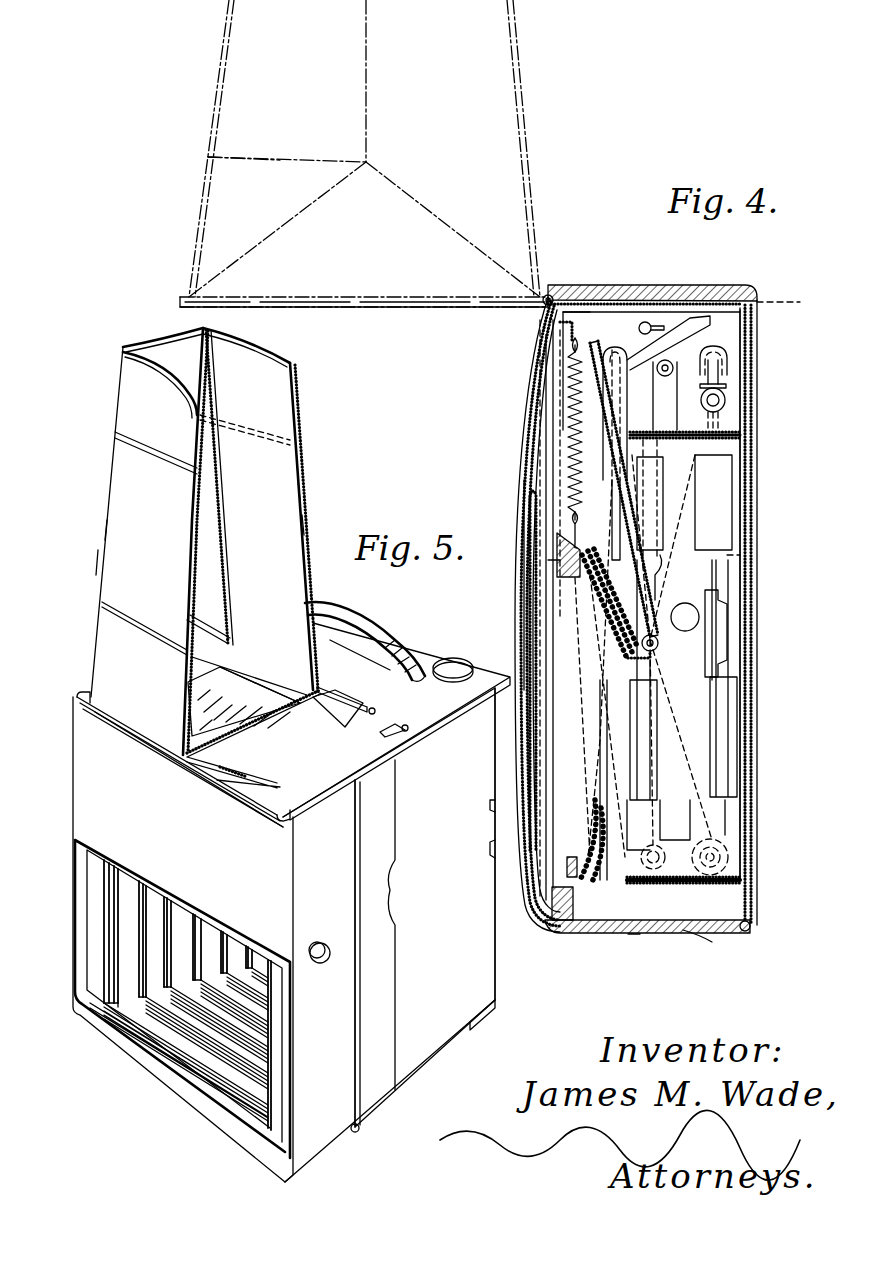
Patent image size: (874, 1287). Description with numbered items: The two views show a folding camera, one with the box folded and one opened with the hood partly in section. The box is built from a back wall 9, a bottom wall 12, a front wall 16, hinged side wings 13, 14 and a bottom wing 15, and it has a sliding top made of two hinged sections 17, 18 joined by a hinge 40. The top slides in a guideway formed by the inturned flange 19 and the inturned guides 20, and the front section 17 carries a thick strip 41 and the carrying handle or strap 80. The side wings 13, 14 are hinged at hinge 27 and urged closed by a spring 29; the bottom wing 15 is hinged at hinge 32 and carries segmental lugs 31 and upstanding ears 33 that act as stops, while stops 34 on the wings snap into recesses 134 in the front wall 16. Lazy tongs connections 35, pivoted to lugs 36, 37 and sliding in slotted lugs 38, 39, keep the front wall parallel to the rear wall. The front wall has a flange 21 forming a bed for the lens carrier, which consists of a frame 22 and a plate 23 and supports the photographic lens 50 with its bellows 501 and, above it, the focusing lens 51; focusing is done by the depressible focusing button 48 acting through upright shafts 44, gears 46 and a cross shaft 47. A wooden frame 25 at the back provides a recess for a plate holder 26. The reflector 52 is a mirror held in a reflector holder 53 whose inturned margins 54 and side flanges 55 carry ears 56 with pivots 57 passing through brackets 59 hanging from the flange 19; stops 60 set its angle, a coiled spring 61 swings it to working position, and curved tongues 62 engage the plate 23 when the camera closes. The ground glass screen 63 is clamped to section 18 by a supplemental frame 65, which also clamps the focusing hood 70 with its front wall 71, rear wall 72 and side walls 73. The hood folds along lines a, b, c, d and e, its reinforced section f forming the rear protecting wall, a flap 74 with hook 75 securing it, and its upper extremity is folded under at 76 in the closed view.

In FIG. 4, the back wall 9 is at (578, 512).
In FIG. 5, the back wall 9 is at (73, 790).
In FIG. 4, the bottom wall 12 is at (620, 900).
In FIG. 4, the hinged side wing 13 is at (760, 642).
In FIG. 5, the hinged side wing 13 is at (460, 844).
In FIG. 4, the hinged side wing 14 is at (746, 618).
In FIG. 4, the bottom wing 15 is at (712, 598).
In FIG. 4, the front wall 16 is at (757, 332).
In FIG. 4, the top wall section 17 is at (712, 300).
In FIG. 5, the top wall section 17 is at (440, 725).
In FIG. 4, the top wall section 18 is at (572, 335).
In FIG. 5, the top wall section 18 is at (380, 308).
In FIG. 4, the inturned flange 19 is at (580, 300).
In FIG. 5, the inturned flange 19 is at (242, 790).
In FIG. 4, the inturned guides 20 is at (789, 302).
In FIG. 5, the inturned guides 20 is at (80, 692).
In FIG. 4, the rearwardly projecting flange 21 is at (632, 418).
In FIG. 4, the hollow rectilinear frame 22 is at (728, 440).
In FIG. 4, the plate 23 is at (660, 590).
In FIG. 4, the wooden frame 25 is at (548, 565).
In FIG. 4, the plate holder 26 is at (610, 775).
In FIG. 5, the hinge 27 is at (355, 830).
In FIG. 5, the spring 29 is at (360, 880).
In FIG. 4, the segmental lugs 31 is at (690, 880).
In FIG. 4, the hinge 32 is at (750, 930).
In FIG. 5, the hinge 32 is at (360, 1132).
In FIG. 4, the upstanding ears 33 is at (728, 558).
In FIG. 5, the upstanding ears 33 is at (485, 1012).
In FIG. 5, the stops 34 is at (497, 808).
In FIG. 5, the recesses 134 is at (497, 855).
In FIG. 4, the lazy tongs connections 35 is at (600, 540).
In FIG. 4, the lug 36 is at (728, 840).
In FIG. 4, the lug 37 is at (590, 835).
In FIG. 4, the slotted lug 38 is at (728, 355).
In FIG. 4, the slotted lug 39 is at (556, 378).
In FIG. 4, the hinge 40 is at (550, 296).
In FIG. 5, the hinge 40 is at (338, 695).
In FIG. 5, the strip 41 is at (420, 648).
In FIG. 4, the upright shaft 44 is at (722, 425).
In FIG. 4, the complemental gear 46 is at (727, 400).
In FIG. 4, the cross shaft 47 is at (728, 392).
In FIG. 5, the depressible focusing button 48 is at (455, 664).
In FIG. 4, the photographic lens 50 is at (738, 722).
In FIG. 4, the focusing lens 51 is at (735, 500).
In FIG. 4, the reflector 52 is at (662, 508).
In FIG. 4, the reflector holder 53 is at (600, 565).
In FIG. 4, the inturned marginal portions 54 is at (620, 300).
In FIG. 4, the flanges 55 is at (630, 400).
In FIG. 4, the ears 56 is at (625, 330).
In FIG. 4, the pivots 57 is at (678, 300).
In FIG. 4, the brackets 59 is at (745, 290).
In FIG. 4, the stops 60 is at (670, 360).
In FIG. 4, the coiled spring 61 is at (562, 413).
In FIG. 4, the curved tongues 62 is at (658, 650).
In FIG. 4, the screen 63 is at (540, 465).
In FIG. 5, the screen 63 is at (340, 300).
In FIG. 4, the supplemental rectangular frame 65 is at (545, 348).
In FIG. 5, the supplemental rectangular frame 65 is at (260, 670).
In FIG. 5, the focusing hood 70 is at (222, 36).
In FIG. 5, the front wall of hood 71 is at (528, 113).
In FIG. 5, the rear wall of hood 72 is at (208, 124).
In FIG. 5, the side walls of hood 73 is at (222, 556).
In FIG. 4, the flap 74 is at (590, 934).
In FIG. 4, the hook 75 is at (640, 934).
In FIG. 4, the folded upper extremity 76 is at (522, 668).
In FIG. 5, the folded upper extremity 76 is at (122, 382).
In FIG. 5, the carrying handle 80 is at (385, 625).
In FIG. 4, the bellows 501 is at (612, 625).
In FIG. 5, the bellows 501 is at (178, 1020).
In FIG. 5, the fold line a is at (368, 97).
In FIG. 5, the fold line b is at (297, 216).
In FIG. 5, the fold line c is at (430, 212).
In FIG. 5, the bend line d is at (275, 158).
In FIG. 5, the fold line e is at (158, 455).
In FIG. 4, the reinforced section f is at (522, 490).
In FIG. 5, the reinforced section f is at (300, 522).